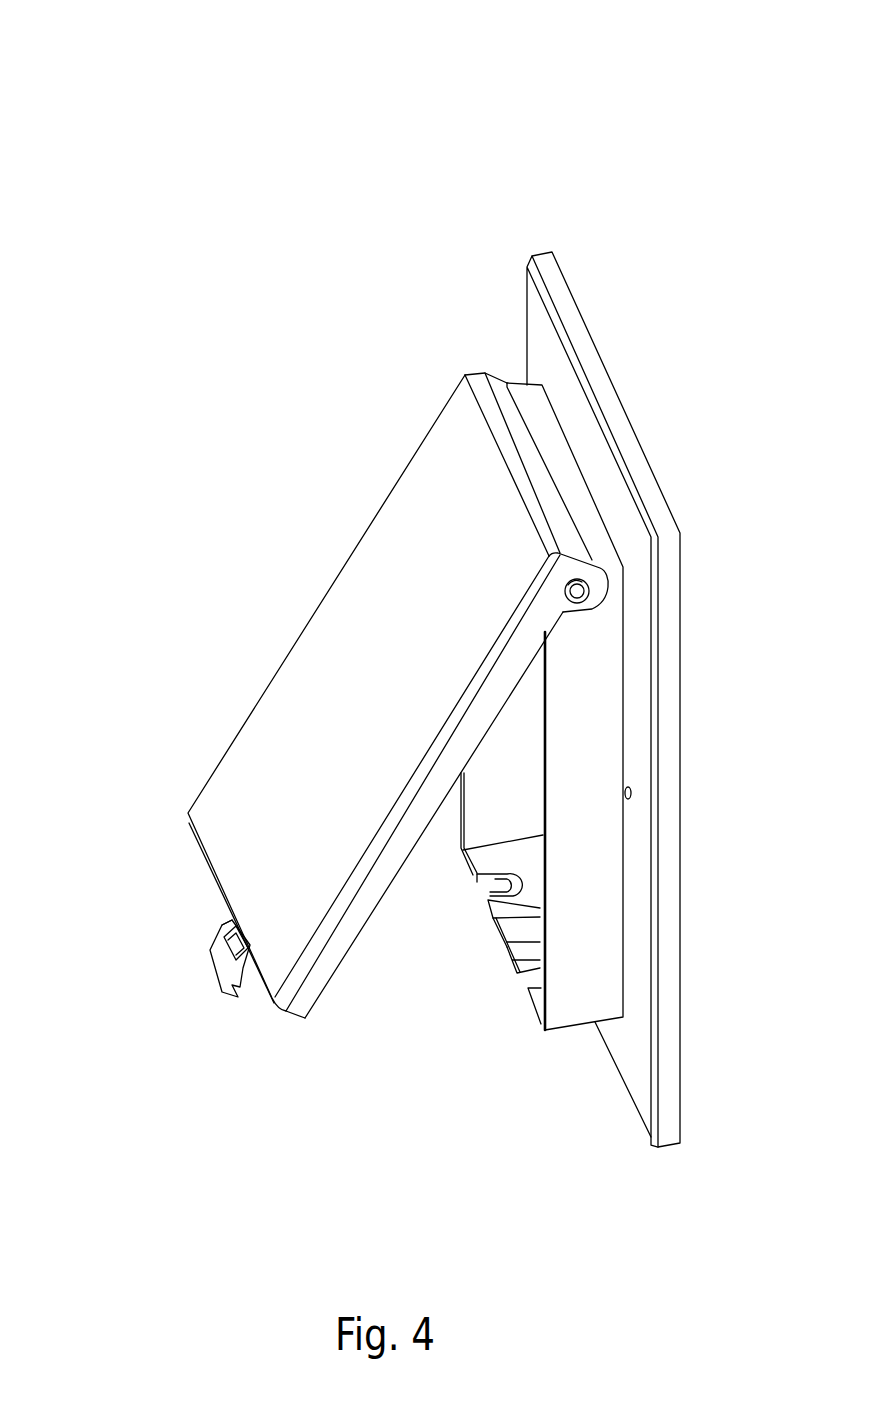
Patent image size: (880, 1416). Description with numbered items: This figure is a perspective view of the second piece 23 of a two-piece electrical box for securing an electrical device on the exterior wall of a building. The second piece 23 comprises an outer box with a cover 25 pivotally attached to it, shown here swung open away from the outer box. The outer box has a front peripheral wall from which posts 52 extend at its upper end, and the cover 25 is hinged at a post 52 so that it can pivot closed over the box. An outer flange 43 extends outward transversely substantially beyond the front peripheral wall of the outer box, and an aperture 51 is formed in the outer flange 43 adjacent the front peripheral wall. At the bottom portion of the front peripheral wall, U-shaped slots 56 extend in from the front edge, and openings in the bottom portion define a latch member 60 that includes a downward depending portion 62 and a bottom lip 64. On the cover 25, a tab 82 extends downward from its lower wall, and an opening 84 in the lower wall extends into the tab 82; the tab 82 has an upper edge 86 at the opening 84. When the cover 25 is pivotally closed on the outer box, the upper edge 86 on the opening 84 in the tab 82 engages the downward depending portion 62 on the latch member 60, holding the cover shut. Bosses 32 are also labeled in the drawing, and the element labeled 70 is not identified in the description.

The second piece 23 is at (192, 323).
The outer flange 43 is at (531, 252).
The cover 25 is at (430, 632).
The bosses 32 is at (524, 730).
The posts 52 is at (577, 593).
The aperture 51 is at (632, 790).
The arm 70 is at (413, 828).
The U-shaped slots 56 is at (500, 889).
The latch member 60 is at (520, 930).
The downward depending portion 62 is at (503, 933).
The bottom lip 64 is at (503, 957).
The tab 82 is at (210, 950).
The opening 84 is at (223, 925).
The upper edge 86 is at (242, 933).